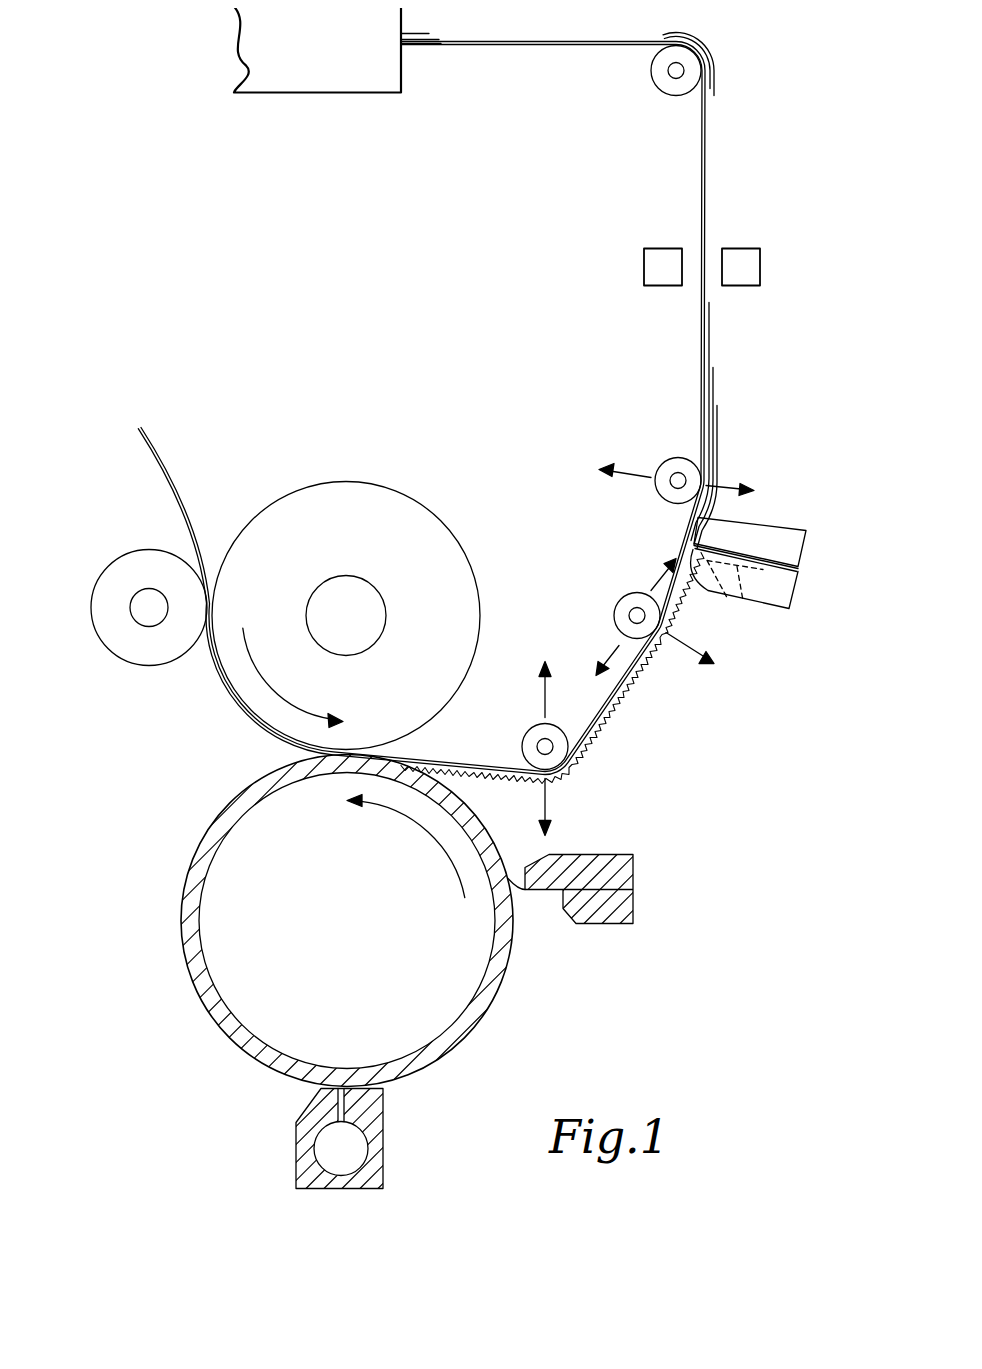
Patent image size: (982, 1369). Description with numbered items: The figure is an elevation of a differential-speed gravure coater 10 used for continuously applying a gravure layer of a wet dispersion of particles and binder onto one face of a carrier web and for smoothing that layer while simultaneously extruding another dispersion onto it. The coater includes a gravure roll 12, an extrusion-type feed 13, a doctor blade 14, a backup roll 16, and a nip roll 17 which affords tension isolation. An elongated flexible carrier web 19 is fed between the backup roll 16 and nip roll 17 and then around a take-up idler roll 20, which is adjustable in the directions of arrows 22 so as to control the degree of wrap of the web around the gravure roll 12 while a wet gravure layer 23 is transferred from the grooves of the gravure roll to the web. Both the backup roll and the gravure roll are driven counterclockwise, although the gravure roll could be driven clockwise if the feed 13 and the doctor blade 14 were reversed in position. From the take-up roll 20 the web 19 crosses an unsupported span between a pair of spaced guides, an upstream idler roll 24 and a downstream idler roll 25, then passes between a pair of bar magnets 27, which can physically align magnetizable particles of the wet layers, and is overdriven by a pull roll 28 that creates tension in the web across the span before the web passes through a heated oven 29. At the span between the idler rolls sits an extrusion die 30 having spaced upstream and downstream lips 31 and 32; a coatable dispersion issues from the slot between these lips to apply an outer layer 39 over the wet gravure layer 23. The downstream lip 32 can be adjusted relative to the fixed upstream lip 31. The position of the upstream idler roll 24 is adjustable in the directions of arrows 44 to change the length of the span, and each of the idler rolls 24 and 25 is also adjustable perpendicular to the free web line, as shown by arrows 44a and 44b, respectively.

The differential-speed gravure coater 10 is at (200, 1065).
The gravure roll 12 is at (180, 898).
The extrusion-type feed 13 is at (347, 1155).
The doctor blade 14 is at (607, 925).
The backup roll 16 is at (452, 533).
The nip roll 17 is at (92, 630).
The carrier web 19 is at (162, 465).
The take-up idler roll 20 is at (520, 742).
The arrows 22 is at (540, 702).
The wet gravure layer 23 is at (710, 376).
The upstream idler roll 24 is at (620, 595).
The downstream idler roll 25 is at (662, 463).
The bar magnets 27 is at (759, 258).
The pull roll 28 is at (658, 91).
The heated oven 29 is at (342, 93).
The extrusion die 30 is at (793, 561).
The upstream lip 31 is at (722, 598).
The downstream lip 32 is at (730, 528).
The outer layer 39 is at (713, 431).
The arrows 44 is at (616, 645).
The arrows 44a is at (673, 640).
The arrows 44b is at (640, 477).